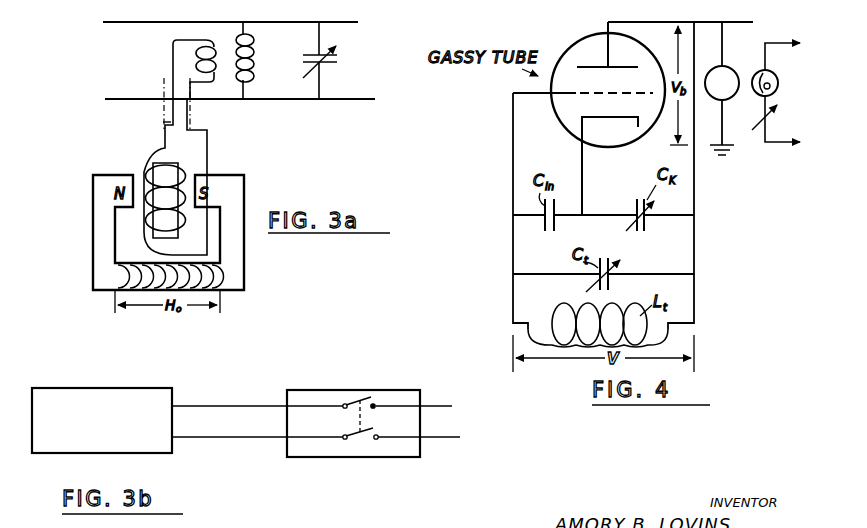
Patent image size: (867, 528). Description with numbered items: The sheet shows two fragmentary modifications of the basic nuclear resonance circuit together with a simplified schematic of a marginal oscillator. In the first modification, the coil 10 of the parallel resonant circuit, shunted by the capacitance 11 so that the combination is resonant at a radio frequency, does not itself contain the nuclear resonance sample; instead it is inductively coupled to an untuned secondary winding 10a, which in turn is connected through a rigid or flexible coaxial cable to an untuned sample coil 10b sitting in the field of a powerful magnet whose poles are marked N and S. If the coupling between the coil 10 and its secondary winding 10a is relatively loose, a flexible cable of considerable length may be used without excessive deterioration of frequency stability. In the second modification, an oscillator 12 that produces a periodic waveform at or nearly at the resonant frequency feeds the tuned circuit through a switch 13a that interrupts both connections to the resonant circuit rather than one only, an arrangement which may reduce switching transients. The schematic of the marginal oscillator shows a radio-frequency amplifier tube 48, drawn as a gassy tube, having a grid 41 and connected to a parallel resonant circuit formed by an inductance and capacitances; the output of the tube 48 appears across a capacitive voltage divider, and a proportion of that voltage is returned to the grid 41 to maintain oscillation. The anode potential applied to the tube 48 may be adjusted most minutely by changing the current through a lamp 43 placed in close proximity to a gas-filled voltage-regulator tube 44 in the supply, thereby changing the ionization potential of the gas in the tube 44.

In FIG. 3a, the coil 10 is at (255, 62).
In FIG. 3a, the secondary winding 10a is at (212, 82).
In FIG. 3a, the sample coil 10b is at (153, 165).
In FIG. 3a, the capacitance 11 is at (336, 50).
In FIG. 3b, the oscillator 12 is at (132, 388).
In FIG. 3b, the switch 13a is at (320, 390).
In FIG. 4, the grid 41 is at (590, 93).
In FIG. 4, the lamp 43 is at (779, 87).
In FIG. 4, the gas-filled voltage-regulator tube 44 is at (728, 67).
In FIG. 4, the radio-frequency amplifier tube 48 is at (570, 45).